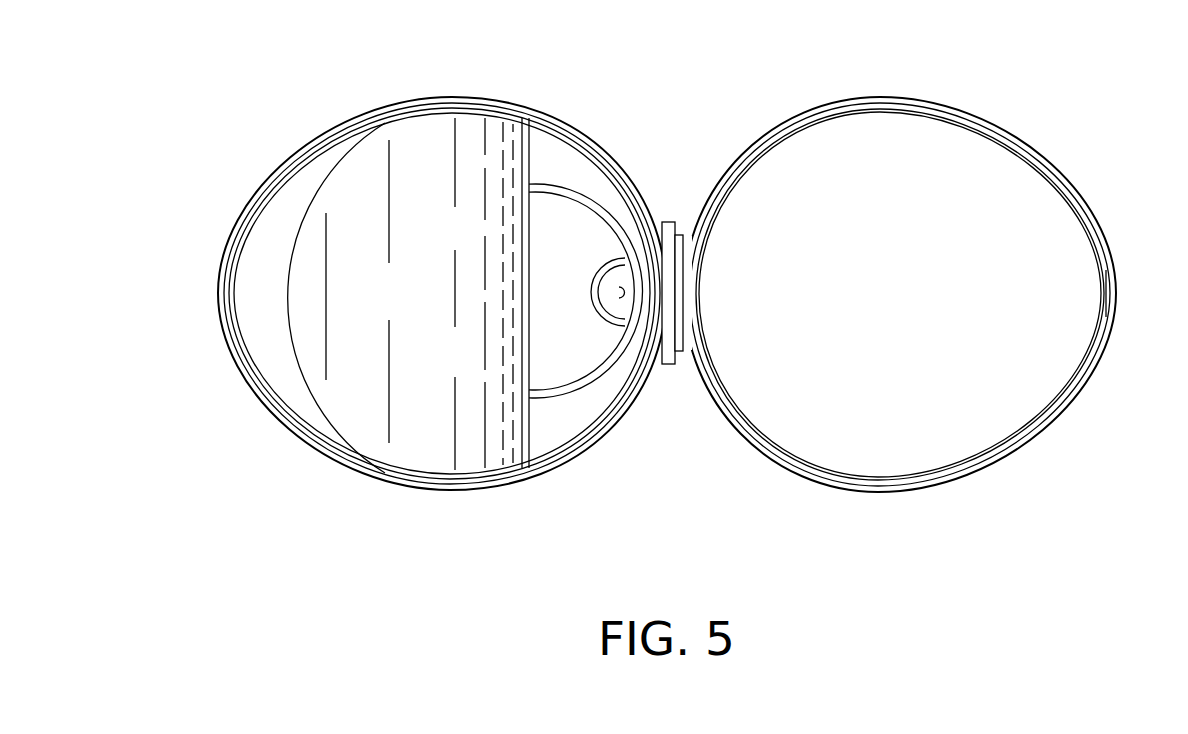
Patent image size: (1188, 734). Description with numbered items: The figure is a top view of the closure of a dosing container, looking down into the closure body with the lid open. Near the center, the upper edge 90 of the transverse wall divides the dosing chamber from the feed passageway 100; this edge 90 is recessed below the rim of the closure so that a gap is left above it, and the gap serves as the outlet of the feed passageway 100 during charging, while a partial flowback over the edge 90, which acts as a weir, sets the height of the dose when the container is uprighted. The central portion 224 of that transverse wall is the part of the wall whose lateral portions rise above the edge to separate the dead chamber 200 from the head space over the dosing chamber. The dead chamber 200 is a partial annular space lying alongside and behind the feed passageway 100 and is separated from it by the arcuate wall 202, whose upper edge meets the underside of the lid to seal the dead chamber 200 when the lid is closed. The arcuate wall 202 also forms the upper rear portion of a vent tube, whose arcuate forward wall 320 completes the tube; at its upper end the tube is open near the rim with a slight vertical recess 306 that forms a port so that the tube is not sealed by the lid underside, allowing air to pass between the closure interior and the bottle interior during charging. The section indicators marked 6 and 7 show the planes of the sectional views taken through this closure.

The upper edge 90 is at (527, 293).
The feed passageway 100 is at (560, 210).
The dead chamber 200 is at (576, 445).
The arcuate wall 202 is at (546, 428).
The central portion of the wall 224 is at (556, 253).
The vertical recess 306 is at (573, 291).
The arcuate forward wall 320 is at (598, 338).
The section line 6 is at (188, 293).
The section line 7 is at (466, 38).